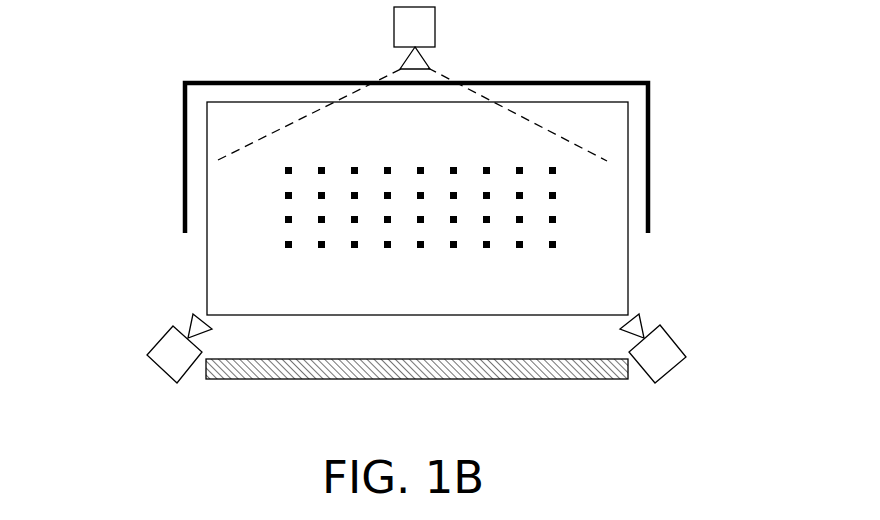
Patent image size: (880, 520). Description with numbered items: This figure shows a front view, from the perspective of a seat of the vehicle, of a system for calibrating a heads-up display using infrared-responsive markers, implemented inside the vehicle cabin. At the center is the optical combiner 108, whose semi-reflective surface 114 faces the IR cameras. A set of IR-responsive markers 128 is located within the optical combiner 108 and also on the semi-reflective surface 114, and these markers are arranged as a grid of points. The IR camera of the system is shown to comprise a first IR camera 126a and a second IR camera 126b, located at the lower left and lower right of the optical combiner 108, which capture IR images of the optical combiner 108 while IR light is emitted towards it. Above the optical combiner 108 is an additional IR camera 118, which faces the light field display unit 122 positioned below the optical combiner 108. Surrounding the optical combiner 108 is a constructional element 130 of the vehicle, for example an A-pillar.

The optical combiner 108 is at (685, 101).
The semi-reflective surface 114 is at (364, 208).
The additional IR camera 118 is at (412, 84).
The light field display unit 122 is at (417, 395).
The first IR camera 126a is at (127, 348).
The second IR camera 126b is at (704, 348).
The IR-responsive markers 128 is at (506, 237).
The constructional element 130 is at (476, 158).